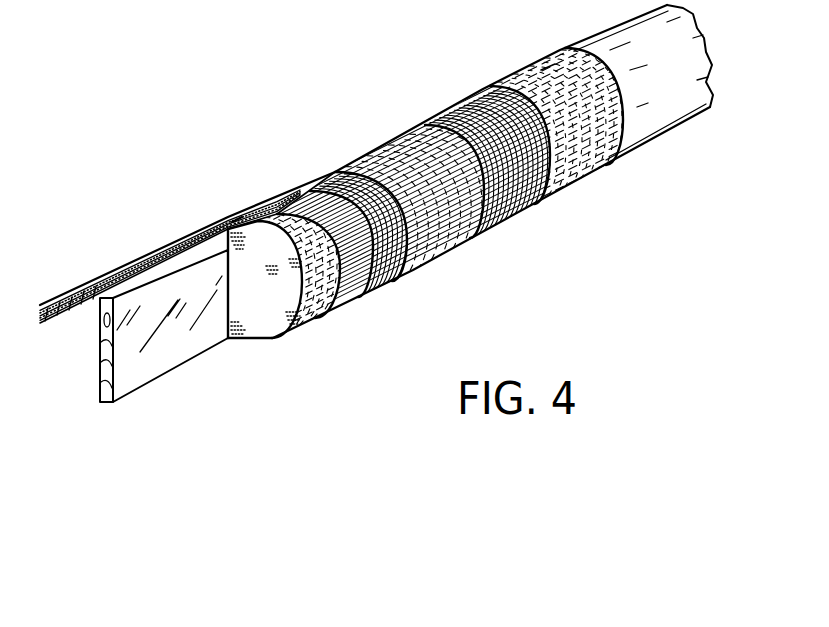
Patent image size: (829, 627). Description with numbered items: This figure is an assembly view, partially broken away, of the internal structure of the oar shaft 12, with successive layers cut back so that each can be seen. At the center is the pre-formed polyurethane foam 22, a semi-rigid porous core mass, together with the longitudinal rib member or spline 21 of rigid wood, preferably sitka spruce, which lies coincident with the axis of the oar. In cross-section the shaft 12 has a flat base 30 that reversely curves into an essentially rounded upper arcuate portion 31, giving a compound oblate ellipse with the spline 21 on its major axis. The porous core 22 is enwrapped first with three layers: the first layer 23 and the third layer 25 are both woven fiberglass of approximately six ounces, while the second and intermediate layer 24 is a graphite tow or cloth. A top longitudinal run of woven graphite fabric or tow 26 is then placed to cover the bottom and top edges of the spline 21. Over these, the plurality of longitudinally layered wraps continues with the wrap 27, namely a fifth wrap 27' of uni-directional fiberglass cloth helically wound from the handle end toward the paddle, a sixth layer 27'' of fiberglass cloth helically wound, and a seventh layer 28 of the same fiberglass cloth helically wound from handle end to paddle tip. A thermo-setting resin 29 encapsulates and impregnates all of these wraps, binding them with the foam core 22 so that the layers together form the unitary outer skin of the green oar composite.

The shaft 12 is at (346, 128).
The longitudinal rib member or spline 21 is at (194, 295).
The polyurethane foam 22 is at (263, 309).
The first layer 23 is at (316, 330).
The second and intermediate layer 24 is at (352, 302).
The third layer 25 is at (403, 285).
The woven graphite fabric or tow 26 is at (310, 172).
The layered wrap 27 is at (187, 247).
The fifth wrap 27' is at (470, 177).
The sixth layer 27'' is at (470, 179).
The seventh layer 28 is at (547, 67).
The thermo-setting resin 29 is at (668, 112).
The flat base 30 is at (240, 355).
The upper arcuate portion 31 is at (237, 210).